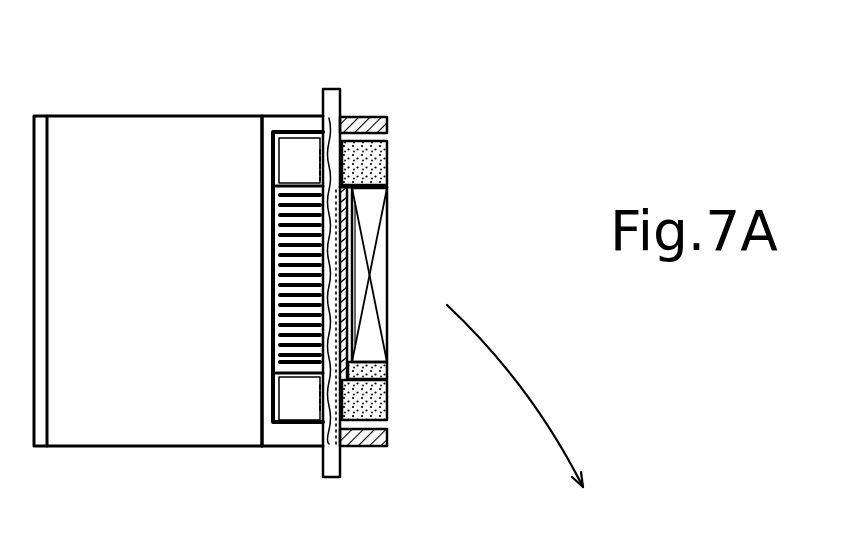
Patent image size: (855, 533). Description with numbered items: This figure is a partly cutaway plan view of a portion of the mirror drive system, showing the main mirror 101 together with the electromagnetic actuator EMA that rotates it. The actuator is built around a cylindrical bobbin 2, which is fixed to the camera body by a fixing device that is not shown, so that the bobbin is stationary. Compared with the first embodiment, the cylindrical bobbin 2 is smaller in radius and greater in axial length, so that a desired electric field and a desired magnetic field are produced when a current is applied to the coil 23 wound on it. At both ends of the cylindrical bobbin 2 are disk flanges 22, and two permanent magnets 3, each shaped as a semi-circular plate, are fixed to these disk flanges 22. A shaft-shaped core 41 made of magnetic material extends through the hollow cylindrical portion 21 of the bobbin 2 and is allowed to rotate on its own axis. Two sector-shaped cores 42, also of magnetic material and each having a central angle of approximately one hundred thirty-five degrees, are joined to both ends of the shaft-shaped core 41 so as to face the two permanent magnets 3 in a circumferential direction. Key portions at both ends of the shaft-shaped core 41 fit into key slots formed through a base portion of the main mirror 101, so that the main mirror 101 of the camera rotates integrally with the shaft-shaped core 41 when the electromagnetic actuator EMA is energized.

The main mirror 101 is at (157, 422).
The sector-shaped core 42 is at (300, 160).
The shaft-shaped core 41 is at (340, 467).
The permanent magnet 3 is at (377, 160).
The cylindrical bobbin 2 is at (387, 190).
The hollow cylindrical portion 21 is at (358, 218).
The disk flange 22 is at (385, 373).
The coil 23 is at (378, 287).
The electromagnetic actuator EMA is at (503, 130).